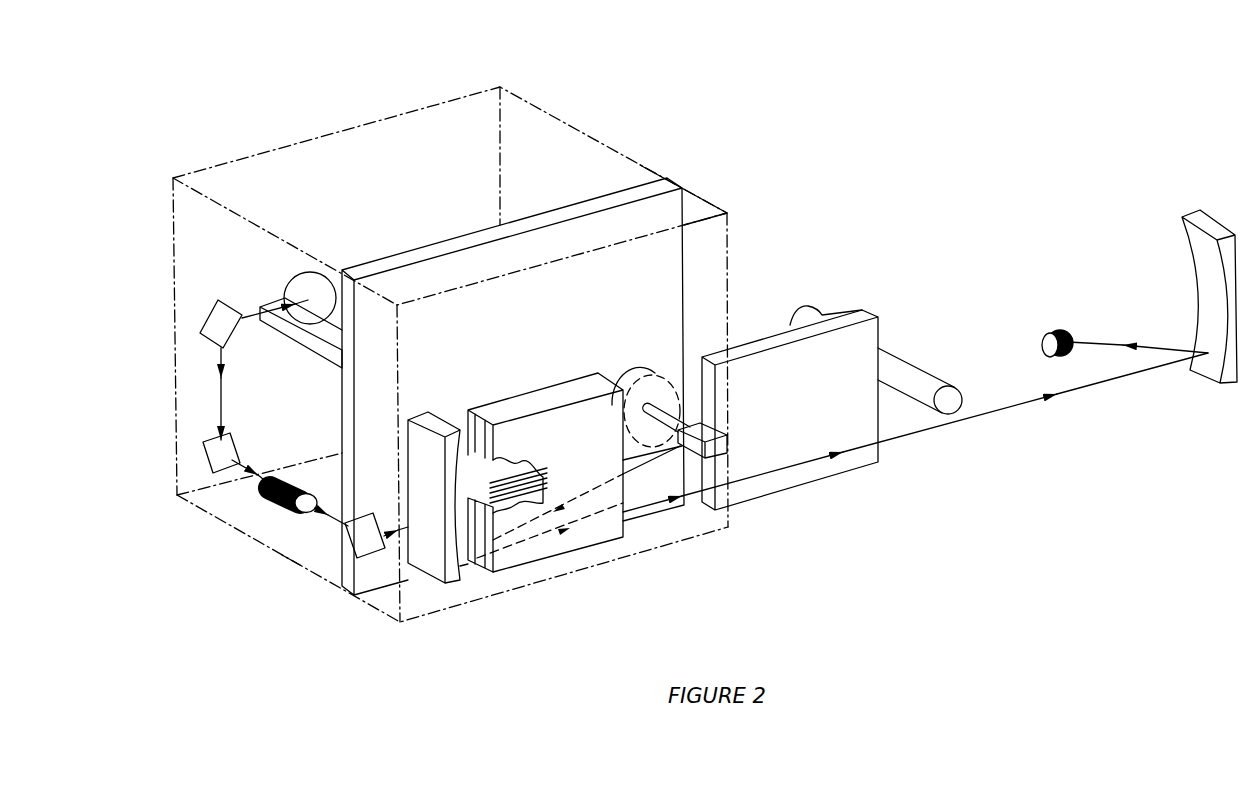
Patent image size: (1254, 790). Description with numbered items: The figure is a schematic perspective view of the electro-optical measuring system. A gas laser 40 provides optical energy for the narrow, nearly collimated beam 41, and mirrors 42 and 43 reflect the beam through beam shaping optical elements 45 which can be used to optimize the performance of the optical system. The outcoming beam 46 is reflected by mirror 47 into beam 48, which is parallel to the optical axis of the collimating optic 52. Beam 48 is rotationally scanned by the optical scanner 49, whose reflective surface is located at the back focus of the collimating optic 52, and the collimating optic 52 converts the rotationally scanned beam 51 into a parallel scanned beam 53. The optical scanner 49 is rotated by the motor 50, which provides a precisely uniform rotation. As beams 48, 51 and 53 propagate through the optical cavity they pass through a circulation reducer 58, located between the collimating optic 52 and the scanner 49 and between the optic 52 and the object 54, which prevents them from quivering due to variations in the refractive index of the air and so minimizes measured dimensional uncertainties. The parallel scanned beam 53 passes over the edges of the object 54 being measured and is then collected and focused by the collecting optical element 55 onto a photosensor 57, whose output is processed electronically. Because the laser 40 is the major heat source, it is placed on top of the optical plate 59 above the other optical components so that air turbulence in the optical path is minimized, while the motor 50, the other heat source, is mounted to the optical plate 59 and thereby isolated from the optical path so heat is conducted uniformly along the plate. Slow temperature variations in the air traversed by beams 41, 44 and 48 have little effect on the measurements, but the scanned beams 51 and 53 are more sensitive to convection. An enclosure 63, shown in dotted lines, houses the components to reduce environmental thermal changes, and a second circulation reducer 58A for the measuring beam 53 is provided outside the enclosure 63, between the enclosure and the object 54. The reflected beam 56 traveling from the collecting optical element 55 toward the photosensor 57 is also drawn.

The gas laser 40 is at (304, 268).
The narrow nearly collimated beam 41 is at (254, 312).
The mirror 42 is at (200, 318).
The mirror 43 is at (201, 450).
The beam 44 is at (258, 461).
The beam shaping optical elements 45 is at (252, 498).
The outcoming beam 46 is at (268, 497).
The mirror 47 is at (292, 562).
The beam 48 is at (389, 540).
The optical scanner 49 is at (728, 442).
The motor 50 is at (623, 366).
The rotationally scanned beam 51 is at (644, 472).
The collimating optic 52 is at (458, 590).
The parallel scanned beam 53 is at (468, 566).
The object 54 is at (913, 358).
The collecting optical element 55 is at (1193, 208).
The reflected beam 56 is at (1172, 347).
The photosensor 57 is at (1045, 330).
The circulation reducer 58 is at (538, 562).
The second circulation reducer 58A is at (813, 493).
The optical plate 59 is at (598, 198).
The enclosure 63 is at (418, 105).